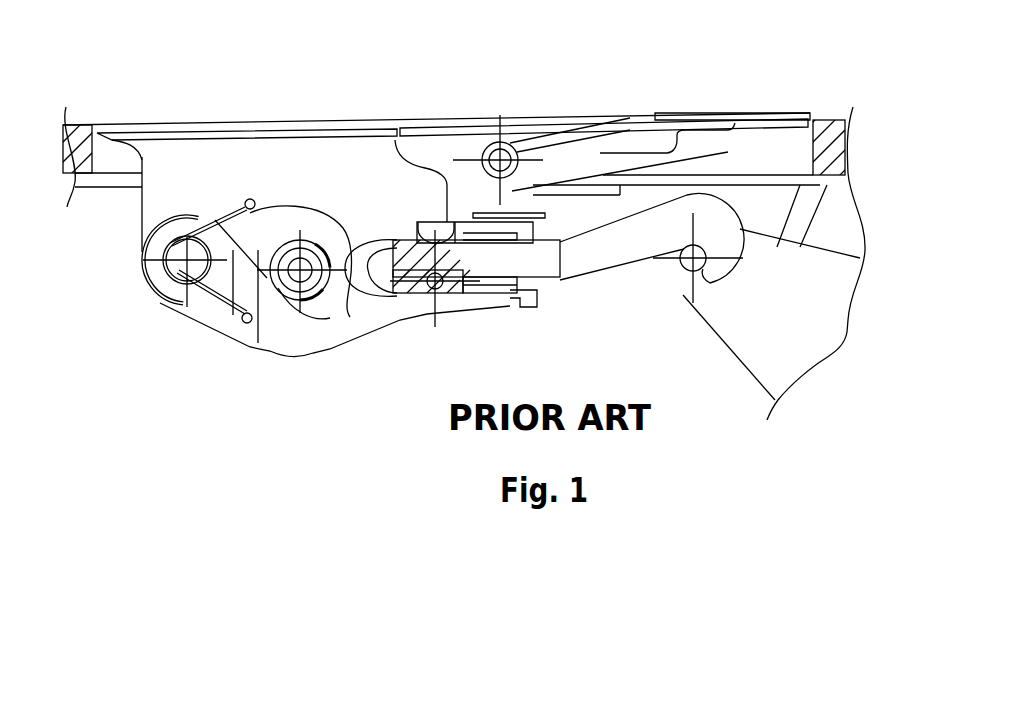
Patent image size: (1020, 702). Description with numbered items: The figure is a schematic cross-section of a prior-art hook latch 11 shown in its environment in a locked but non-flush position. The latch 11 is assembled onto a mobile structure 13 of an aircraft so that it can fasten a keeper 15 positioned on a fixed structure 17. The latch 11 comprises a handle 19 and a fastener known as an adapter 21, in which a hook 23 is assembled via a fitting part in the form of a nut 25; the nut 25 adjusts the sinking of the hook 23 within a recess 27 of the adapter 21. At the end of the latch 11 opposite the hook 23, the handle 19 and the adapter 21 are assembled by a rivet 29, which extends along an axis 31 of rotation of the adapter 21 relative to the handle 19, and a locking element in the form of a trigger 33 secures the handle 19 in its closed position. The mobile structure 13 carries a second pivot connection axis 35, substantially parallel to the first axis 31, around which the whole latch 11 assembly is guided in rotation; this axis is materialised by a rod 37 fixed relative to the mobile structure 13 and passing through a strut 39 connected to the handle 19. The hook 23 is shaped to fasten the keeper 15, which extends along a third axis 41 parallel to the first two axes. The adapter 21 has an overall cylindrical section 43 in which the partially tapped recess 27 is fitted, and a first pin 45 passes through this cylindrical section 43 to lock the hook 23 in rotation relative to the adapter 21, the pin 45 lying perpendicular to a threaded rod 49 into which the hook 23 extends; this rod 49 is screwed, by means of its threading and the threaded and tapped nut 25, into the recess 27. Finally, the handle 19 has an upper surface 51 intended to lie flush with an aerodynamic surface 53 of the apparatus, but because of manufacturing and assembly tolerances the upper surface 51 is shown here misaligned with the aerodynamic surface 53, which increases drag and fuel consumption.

The hook latch 11 is at (150, 92).
The mobile structure 13 is at (590, 198).
The keeper 15 is at (678, 266).
The fixed structure 17 is at (743, 308).
The handle 19 is at (194, 173).
The adapter 21 is at (247, 329).
The hook 23 is at (746, 252).
The nut 25 is at (532, 308).
The recess 27 is at (372, 276).
The rivet 29 is at (168, 253).
The axis of rotation 31 is at (173, 274).
The trigger 33 is at (663, 136).
The second pivot connection axis 35 is at (282, 287).
The rod 37 is at (317, 288).
The strut 39 is at (313, 243).
The third axis 41 is at (688, 270).
The cylindrical section 43 is at (427, 316).
The first pin 45 is at (443, 287).
The threaded rod 49 is at (398, 300).
The upper surface 51 is at (757, 113).
The aerodynamic surface 53 is at (833, 120).